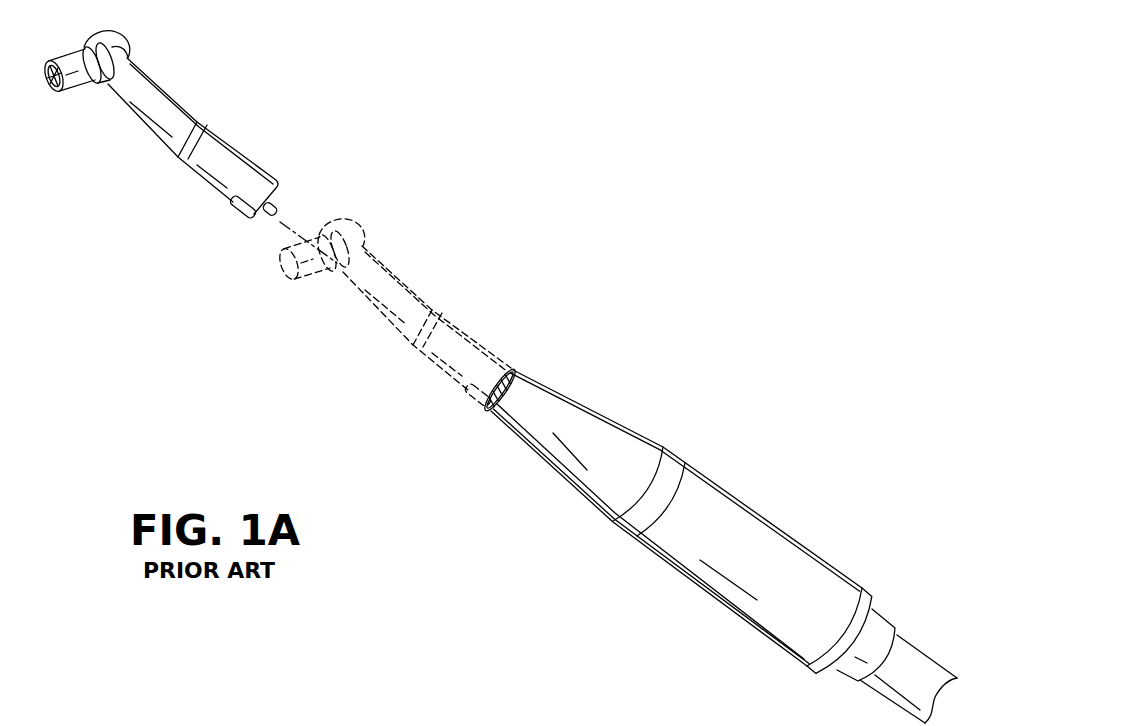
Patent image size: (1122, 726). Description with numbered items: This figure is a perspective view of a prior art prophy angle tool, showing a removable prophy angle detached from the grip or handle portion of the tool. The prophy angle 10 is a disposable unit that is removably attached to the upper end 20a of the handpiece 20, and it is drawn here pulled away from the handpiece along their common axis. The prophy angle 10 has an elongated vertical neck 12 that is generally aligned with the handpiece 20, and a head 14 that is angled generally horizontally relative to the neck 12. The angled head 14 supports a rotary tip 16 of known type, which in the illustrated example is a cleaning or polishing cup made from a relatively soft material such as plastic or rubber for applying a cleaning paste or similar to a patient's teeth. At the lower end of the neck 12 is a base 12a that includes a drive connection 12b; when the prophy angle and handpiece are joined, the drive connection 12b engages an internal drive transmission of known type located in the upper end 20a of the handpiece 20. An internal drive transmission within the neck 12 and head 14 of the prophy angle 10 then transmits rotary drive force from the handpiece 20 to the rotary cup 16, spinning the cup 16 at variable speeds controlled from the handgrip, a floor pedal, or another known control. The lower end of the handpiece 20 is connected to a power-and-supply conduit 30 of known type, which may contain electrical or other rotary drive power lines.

The prophy angle 10 is at (224, 101).
The neck 12 is at (157, 106).
The base 12a is at (278, 199).
The drive connection 12b is at (274, 204).
The head 14 is at (118, 40).
The rotary tip 16 is at (54, 86).
The handpiece 20 is at (698, 500).
The upper end 20a is at (515, 391).
The power-and-supply conduit 30 is at (903, 667).